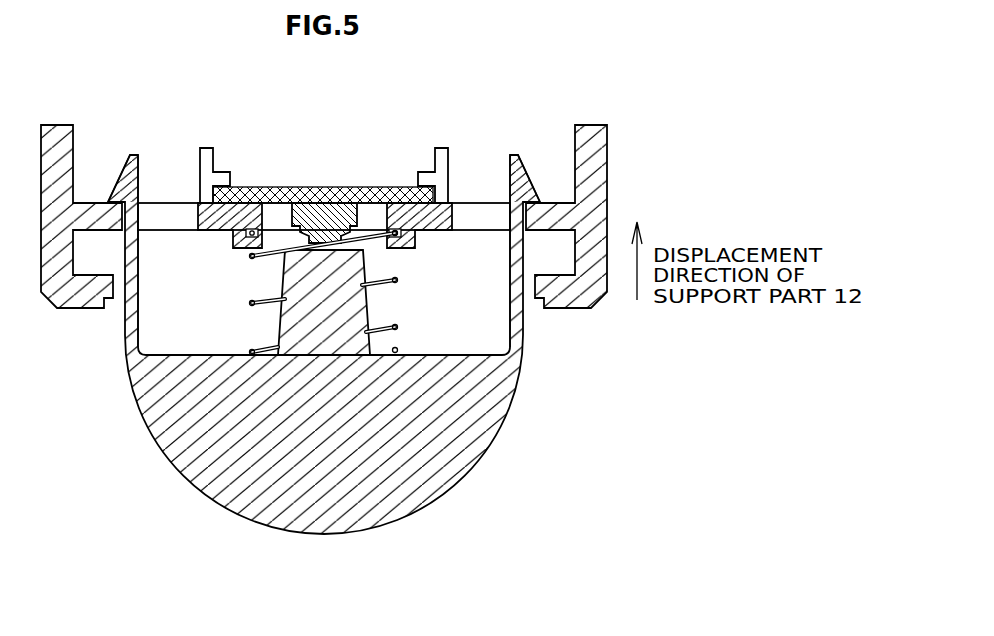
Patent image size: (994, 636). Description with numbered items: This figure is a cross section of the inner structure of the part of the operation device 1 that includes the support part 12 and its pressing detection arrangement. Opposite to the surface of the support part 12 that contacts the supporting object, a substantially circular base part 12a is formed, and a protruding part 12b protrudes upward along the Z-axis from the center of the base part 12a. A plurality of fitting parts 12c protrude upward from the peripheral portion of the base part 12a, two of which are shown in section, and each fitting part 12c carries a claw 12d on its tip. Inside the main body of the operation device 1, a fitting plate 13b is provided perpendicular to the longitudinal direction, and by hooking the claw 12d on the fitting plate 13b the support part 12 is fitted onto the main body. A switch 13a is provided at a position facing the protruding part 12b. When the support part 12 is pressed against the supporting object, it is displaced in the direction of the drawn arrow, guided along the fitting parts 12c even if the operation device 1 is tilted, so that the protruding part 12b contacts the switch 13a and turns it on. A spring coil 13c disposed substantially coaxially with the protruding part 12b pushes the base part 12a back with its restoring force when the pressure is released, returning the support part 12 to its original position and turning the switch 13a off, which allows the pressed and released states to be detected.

The operation device 1 is at (587, 95).
The support part 12 is at (177, 515).
The base part 12a is at (183, 353).
The protruding part 12b is at (363, 305).
The fitting part 12c is at (140, 252).
The claw 12d is at (108, 200).
The switch 13a is at (325, 210).
The fitting plate 13b is at (95, 202).
The spring coil 13c is at (252, 302).